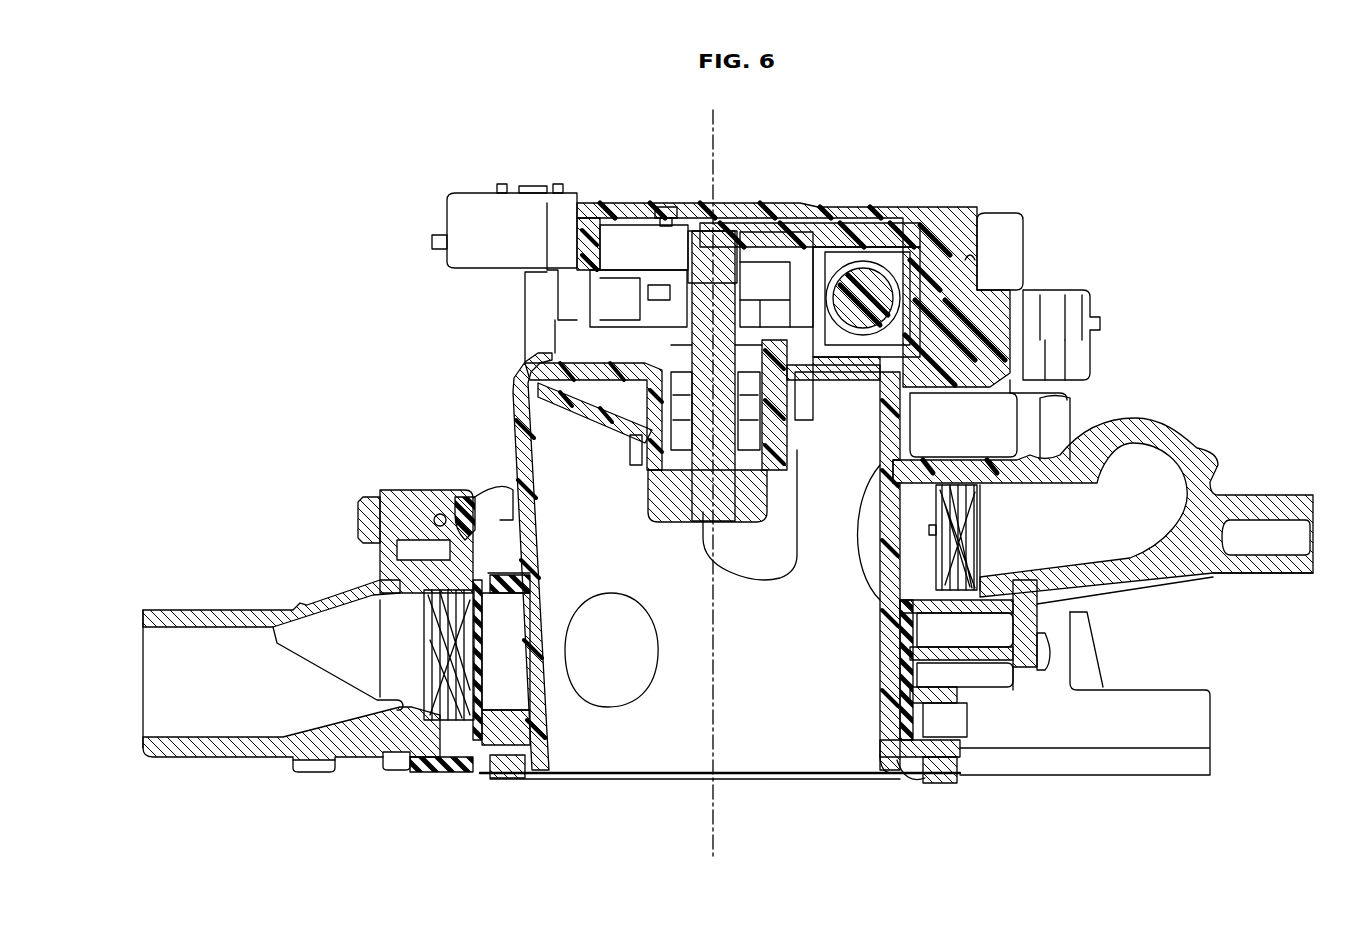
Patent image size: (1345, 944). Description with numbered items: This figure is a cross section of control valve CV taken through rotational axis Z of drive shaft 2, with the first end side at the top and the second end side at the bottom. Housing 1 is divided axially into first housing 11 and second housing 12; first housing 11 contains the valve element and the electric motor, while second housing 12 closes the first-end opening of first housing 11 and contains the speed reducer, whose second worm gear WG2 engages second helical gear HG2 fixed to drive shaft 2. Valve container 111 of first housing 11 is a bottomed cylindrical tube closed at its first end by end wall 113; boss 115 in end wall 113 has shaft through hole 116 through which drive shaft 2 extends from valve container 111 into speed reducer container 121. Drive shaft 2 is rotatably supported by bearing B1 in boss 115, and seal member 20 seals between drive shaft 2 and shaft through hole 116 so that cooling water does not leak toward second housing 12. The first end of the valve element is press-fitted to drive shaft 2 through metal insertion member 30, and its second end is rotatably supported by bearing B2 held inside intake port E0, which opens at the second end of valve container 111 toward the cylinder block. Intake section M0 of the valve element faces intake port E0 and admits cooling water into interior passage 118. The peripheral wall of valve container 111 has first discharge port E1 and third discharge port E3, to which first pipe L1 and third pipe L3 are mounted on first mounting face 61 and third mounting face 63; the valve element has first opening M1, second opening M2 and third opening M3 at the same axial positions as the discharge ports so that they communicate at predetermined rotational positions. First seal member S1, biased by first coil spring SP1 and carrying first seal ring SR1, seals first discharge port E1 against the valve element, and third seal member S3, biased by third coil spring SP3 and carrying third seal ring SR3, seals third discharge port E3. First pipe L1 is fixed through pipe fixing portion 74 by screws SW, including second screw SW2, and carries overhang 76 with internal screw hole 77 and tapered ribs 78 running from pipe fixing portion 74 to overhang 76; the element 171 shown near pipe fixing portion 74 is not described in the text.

The rotational axis Z is at (717, 140).
The control valve CV is at (1012, 188).
The speed reducer container 121 is at (615, 253).
The bearing B1 is at (668, 210).
The insertion member 30 is at (686, 520).
The drive shaft 2 is at (885, 133).
The second helical gear HG2 is at (820, 250).
The second worm gear WG2 is at (872, 260).
The second housing 12 is at (1047, 248).
The housing 1 is at (1240, 233).
The valve container 111 is at (1018, 337).
The first housing 11 is at (1107, 383).
The seal member 20 is at (648, 392).
The shaft through hole 116 is at (660, 466).
The boss 115 is at (797, 445).
The end wall 113 is at (818, 370).
The first seal ring SR1 is at (927, 470).
The first mounting face 61 is at (1030, 477).
The first pipe L1 is at (1220, 448).
The overhang 76 is at (1267, 507).
The internal screw hole 77 is at (1272, 525).
The ribs 78 is at (1192, 590).
The first coil spring SP1 is at (980, 545).
The first seal member S1 is at (980, 492).
The first discharge port E1 is at (917, 543).
The first opening M1 is at (877, 570).
The screw SW is at (367, 527).
The third mounting face 63 is at (400, 495).
The third seal ring SR3 is at (495, 578).
The second opening M2 is at (528, 462).
The third seal member S3 is at (532, 582).
The third pipe L3 is at (213, 760).
The third coil spring SP3 is at (445, 745).
The bearing B2 is at (520, 773).
The third discharge port E3 is at (497, 630).
The third opening M3 is at (660, 660).
The interior passage 118 is at (673, 727).
The intake section M0 is at (877, 753).
The seal holder 171 is at (930, 765).
The pipe fixing portion 74 is at (1027, 677).
The intake port E0 is at (905, 790).
The second screw SW2 is at (1045, 658).